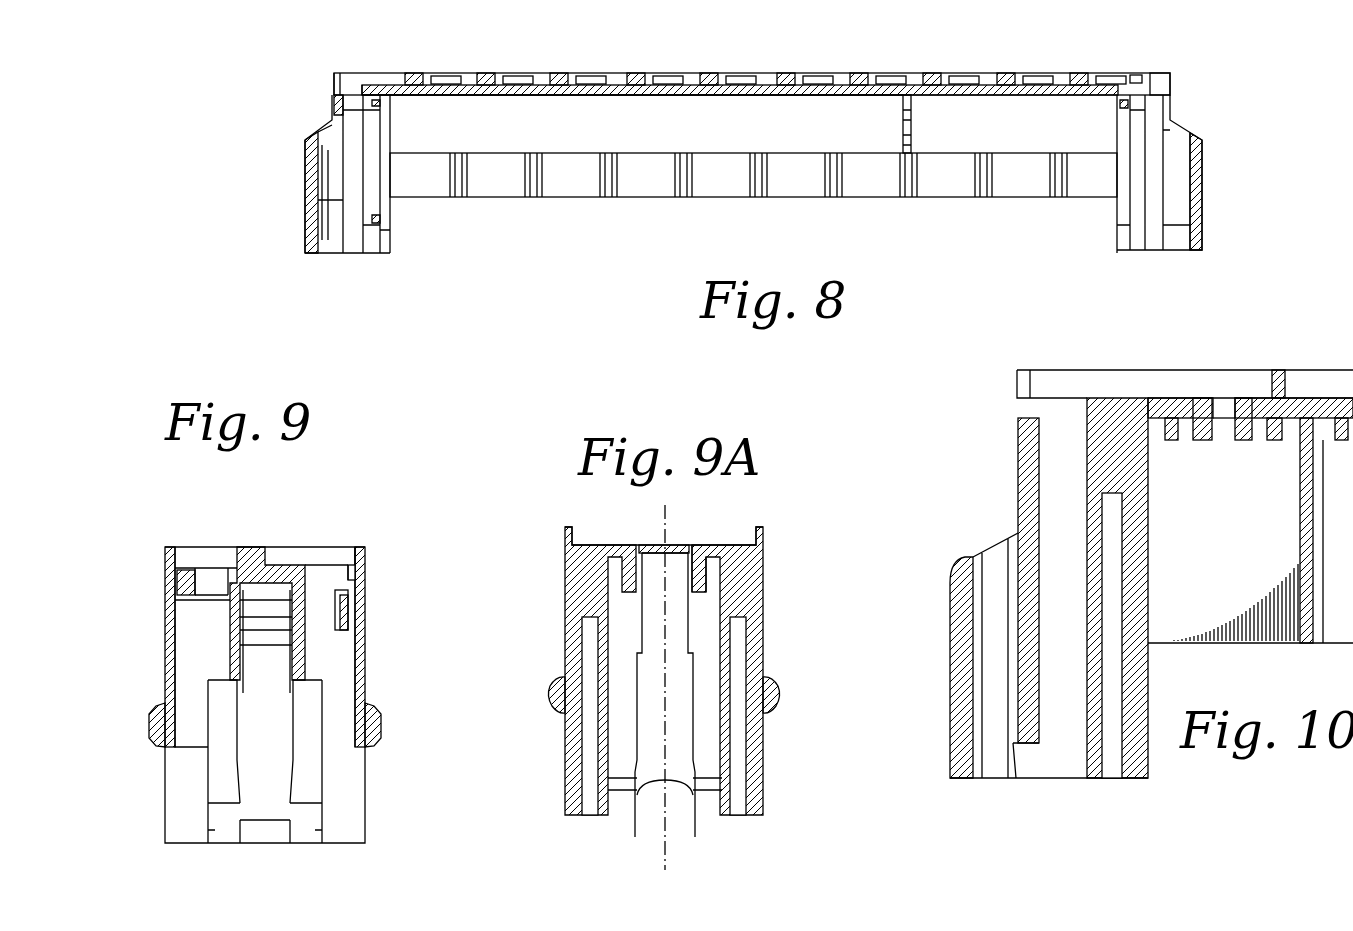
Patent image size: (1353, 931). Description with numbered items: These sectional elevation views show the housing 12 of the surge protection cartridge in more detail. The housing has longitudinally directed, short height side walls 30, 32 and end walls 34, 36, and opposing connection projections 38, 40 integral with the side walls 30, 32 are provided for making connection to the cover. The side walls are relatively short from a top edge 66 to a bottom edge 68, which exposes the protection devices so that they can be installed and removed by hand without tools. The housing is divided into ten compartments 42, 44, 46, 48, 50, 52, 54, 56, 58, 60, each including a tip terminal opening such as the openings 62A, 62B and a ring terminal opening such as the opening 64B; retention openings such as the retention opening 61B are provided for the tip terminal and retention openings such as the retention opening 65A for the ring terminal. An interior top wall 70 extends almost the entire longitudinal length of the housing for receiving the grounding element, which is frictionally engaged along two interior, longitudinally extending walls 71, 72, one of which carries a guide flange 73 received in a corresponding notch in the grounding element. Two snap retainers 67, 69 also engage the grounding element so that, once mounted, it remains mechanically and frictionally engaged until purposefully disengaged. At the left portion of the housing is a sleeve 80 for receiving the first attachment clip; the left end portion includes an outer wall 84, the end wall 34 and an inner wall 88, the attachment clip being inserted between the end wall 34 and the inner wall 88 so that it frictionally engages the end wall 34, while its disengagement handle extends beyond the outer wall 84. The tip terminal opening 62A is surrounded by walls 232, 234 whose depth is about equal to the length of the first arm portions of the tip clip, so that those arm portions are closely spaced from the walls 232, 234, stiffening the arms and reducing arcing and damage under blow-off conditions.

In FIG. 8, the housing 12 is at (637, 50).
In FIG. 8, the top edge 66 is at (563, 73).
In FIG. 9, the top edge 66 is at (359, 547).
In FIG. 8, the interior top wall 70 is at (736, 95).
In FIG. 9, the interior top wall 70 is at (253, 590).
In FIG. 9A, the interior top wall 70 is at (697, 603).
In FIG. 8, the end wall 36 is at (1172, 80).
In FIG. 8, the interior longitudinally extending wall 71 is at (840, 134).
In FIG. 9, the interior longitudinally extending wall 71 is at (250, 655).
In FIG. 8, the guide flange 73 is at (912, 120).
In FIG. 9, the guide flange 73 is at (253, 601).
In FIG. 8, the outer wall 84 is at (305, 200).
In FIG. 10, the outer wall 84 is at (960, 664).
In FIG. 8, the end wall 34 is at (343, 222).
In FIG. 10, the end wall 34 is at (1016, 500).
In FIG. 8, the inner wall 88 is at (362, 203).
In FIG. 10, the inner wall 88 is at (1087, 688).
In FIG. 8, the compartment 42 is at (435, 178).
In FIG. 8, the compartment 44 is at (514, 178).
In FIG. 8, the compartment 46 is at (576, 178).
In FIG. 8, the compartment 48 is at (652, 178).
In FIG. 8, the compartment 50 is at (724, 178).
In FIG. 8, the compartment 52 is at (793, 178).
In FIG. 8, the compartment 54 is at (865, 178).
In FIG. 8, the compartment 56 is at (949, 178).
In FIG. 8, the compartment 58 is at (1019, 178).
In FIG. 8, the compartment 60 is at (1076, 178).
In FIG. 9A, the compartment 60 is at (588, 543).
In FIG. 8, the bottom edge 68 is at (625, 197).
In FIG. 9, the bottom edge 68 is at (168, 742).
In FIG. 9, the retention opening 61B is at (176, 546).
In FIG. 9, the tip terminal opening 62B is at (210, 580).
In FIG. 9, the ring terminal opening 64B is at (318, 590).
In FIG. 9, the retention opening 65A is at (349, 610).
In FIG. 9, the side wall 30 is at (366, 650).
In FIG. 9A, the side wall 30 is at (565, 635).
In FIG. 9, the side wall 32 is at (170, 616).
In FIG. 9A, the side wall 32 is at (763, 645).
In FIG. 9, the connection projection 38 is at (378, 704).
In FIG. 9A, the connection projection 38 is at (553, 700).
In FIG. 9, the connection projection 40 is at (153, 712).
In FIG. 9A, the connection projection 40 is at (778, 690).
In FIG. 9, the interior longitudinally extending wall 72 is at (282, 648).
In FIG. 9A, the snap retainer 67 is at (658, 550).
In FIG. 9A, the snap retainer 69 is at (714, 545).
In FIG. 10, the wall 232 is at (1192, 423).
In FIG. 10, the tip terminal opening 62A is at (1223, 405).
In FIG. 10, the wall 234 is at (1258, 423).
In FIG. 10, the sleeve 80 is at (1067, 738).